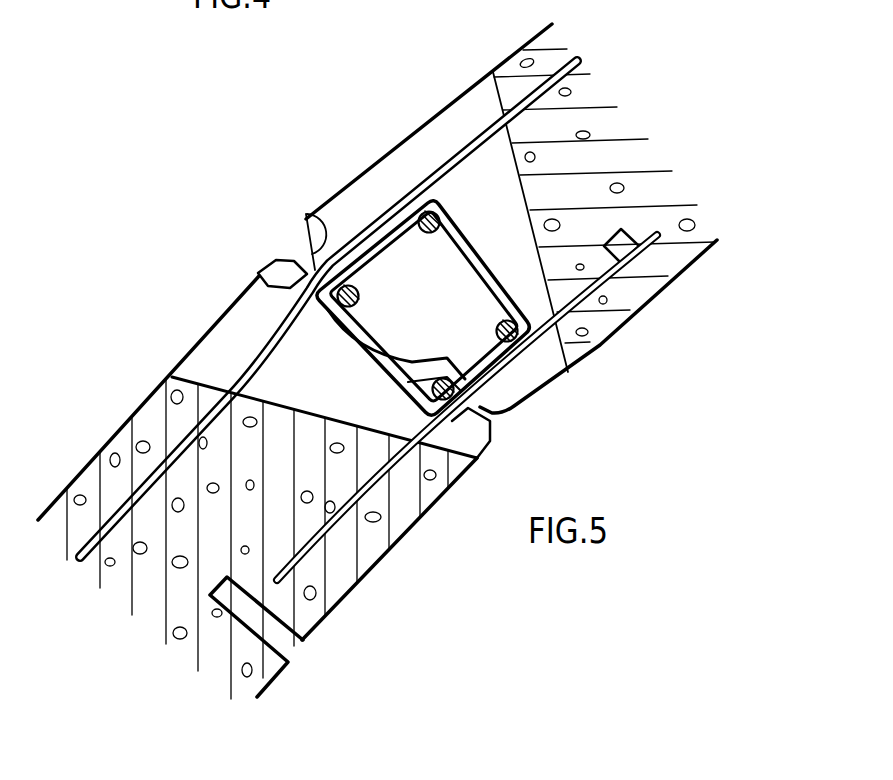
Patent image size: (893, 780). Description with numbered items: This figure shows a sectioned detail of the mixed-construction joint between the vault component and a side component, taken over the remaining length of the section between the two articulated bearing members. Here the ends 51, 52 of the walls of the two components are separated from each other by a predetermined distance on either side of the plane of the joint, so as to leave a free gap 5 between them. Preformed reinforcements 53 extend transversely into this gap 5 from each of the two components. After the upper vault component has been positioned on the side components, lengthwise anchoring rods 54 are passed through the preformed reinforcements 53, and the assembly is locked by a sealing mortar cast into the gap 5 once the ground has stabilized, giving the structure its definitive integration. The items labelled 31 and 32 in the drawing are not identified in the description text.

The free gap 5 is at (453, 133).
The clip 31 is at (323, 216).
The spacer block 32 is at (263, 270).
The end of wall of vault component 51 is at (527, 195).
The end of wall of side component 52 is at (211, 378).
The preformed reinforcements 53 is at (390, 233).
The lengthwise anchoring rods 54 is at (419, 211).